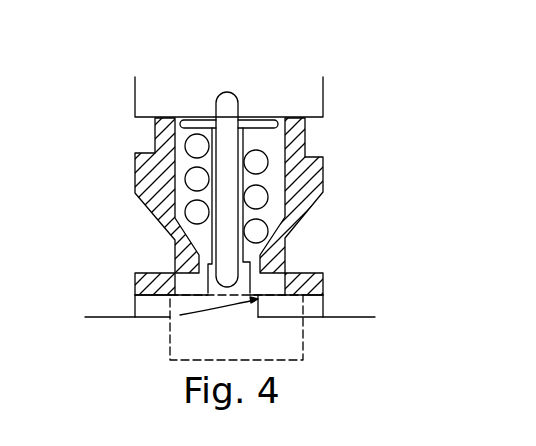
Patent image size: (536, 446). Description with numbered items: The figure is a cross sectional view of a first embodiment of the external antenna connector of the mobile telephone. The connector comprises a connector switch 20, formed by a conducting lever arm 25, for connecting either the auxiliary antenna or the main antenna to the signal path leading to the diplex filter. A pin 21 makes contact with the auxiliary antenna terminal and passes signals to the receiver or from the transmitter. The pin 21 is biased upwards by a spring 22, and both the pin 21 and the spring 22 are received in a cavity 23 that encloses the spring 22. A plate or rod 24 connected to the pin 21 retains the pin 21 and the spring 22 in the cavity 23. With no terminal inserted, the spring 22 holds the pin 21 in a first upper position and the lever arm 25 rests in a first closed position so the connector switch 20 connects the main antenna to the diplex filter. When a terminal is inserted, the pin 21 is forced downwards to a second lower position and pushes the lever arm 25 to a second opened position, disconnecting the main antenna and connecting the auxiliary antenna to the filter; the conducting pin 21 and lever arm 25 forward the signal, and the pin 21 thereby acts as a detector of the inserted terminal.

The connector switch 20 is at (170, 330).
The pin 21 is at (232, 100).
The spring 22 is at (258, 163).
The cavity 23 is at (287, 193).
The plate or rod 24 is at (270, 126).
The lever arm 25 is at (233, 307).